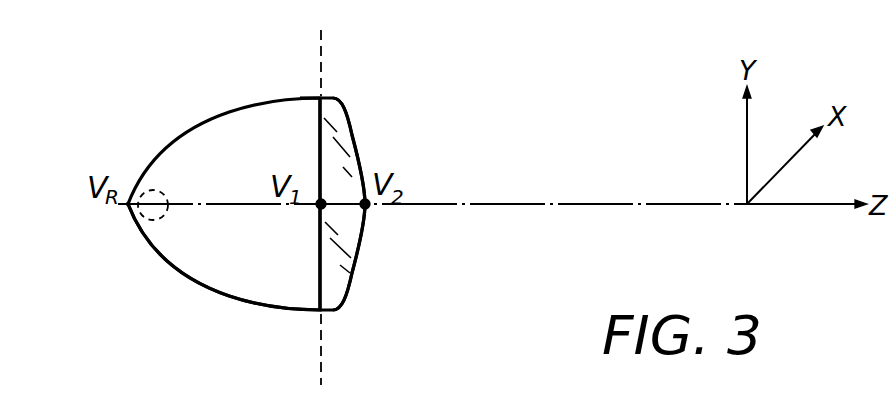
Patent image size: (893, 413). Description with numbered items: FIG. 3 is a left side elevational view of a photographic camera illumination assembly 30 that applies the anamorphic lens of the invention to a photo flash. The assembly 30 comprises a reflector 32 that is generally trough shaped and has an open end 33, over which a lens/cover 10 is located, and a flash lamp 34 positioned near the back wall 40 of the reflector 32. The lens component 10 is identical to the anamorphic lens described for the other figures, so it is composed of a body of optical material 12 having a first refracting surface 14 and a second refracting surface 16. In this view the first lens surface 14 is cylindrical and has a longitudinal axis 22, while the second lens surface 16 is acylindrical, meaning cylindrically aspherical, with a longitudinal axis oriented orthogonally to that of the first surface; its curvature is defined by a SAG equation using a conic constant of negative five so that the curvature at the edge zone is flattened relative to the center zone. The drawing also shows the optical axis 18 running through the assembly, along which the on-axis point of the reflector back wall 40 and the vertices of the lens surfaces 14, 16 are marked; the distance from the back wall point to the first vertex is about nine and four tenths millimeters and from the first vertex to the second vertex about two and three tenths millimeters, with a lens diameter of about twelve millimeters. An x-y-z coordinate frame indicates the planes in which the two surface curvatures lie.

The anamorphic lens 10 is at (358, 292).
The body of optical material 12 is at (352, 128).
The first refracting surface 14 is at (320, 268).
The second refracting surface 16 is at (361, 254).
The optical axis 18 is at (573, 205).
The longitudinal axis 22 is at (316, 192).
The photographic camera illumination assembly 30 is at (158, 99).
The reflector 32 is at (207, 288).
The open end 33 is at (318, 97).
The flash lamp 34 is at (151, 190).
The back wall 40 is at (141, 233).